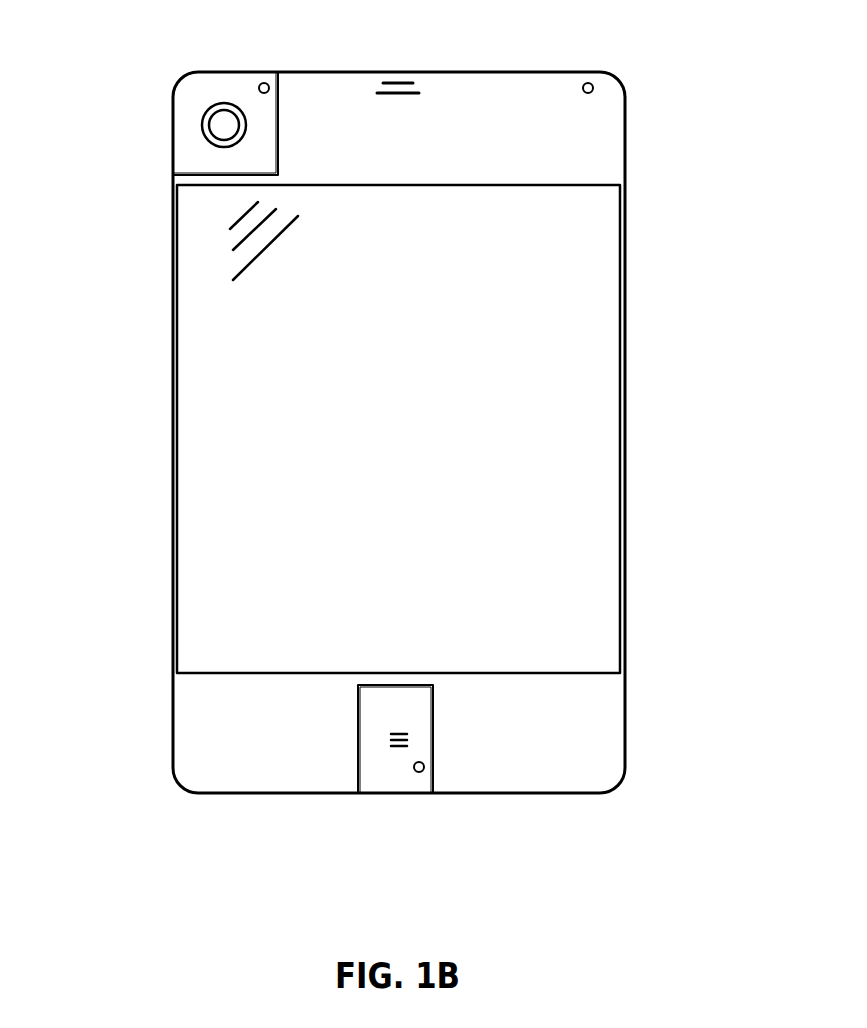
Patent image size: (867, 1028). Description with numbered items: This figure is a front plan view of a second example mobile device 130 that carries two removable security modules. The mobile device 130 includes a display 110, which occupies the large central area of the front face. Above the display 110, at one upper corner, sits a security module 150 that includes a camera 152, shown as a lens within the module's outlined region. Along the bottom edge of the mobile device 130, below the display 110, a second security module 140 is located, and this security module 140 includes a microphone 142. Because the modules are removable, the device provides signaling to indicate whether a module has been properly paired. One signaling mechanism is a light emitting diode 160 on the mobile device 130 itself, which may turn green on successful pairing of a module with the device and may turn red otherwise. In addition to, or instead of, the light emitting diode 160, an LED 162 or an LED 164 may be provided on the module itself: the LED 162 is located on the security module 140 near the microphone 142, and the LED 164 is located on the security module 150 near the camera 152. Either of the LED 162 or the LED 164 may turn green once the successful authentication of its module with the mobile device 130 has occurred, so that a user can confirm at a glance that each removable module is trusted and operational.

The display 110 is at (612, 358).
The mobile device 130 is at (627, 268).
The security module 140 is at (368, 787).
The microphone 142 is at (399, 750).
The security module 150 is at (177, 167).
The camera 152 is at (204, 128).
The light emitting diode 160 is at (593, 86).
The LED 162 is at (422, 771).
The LED 164 is at (261, 83).